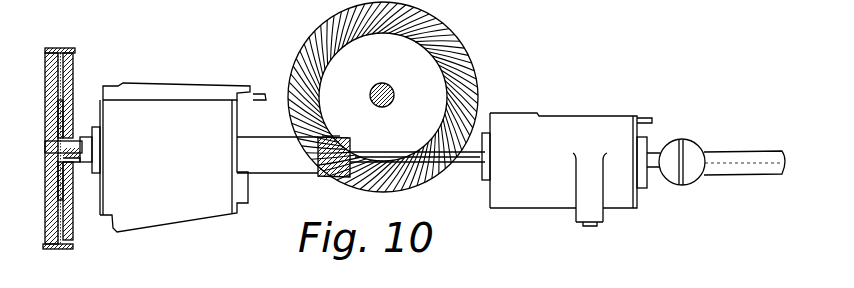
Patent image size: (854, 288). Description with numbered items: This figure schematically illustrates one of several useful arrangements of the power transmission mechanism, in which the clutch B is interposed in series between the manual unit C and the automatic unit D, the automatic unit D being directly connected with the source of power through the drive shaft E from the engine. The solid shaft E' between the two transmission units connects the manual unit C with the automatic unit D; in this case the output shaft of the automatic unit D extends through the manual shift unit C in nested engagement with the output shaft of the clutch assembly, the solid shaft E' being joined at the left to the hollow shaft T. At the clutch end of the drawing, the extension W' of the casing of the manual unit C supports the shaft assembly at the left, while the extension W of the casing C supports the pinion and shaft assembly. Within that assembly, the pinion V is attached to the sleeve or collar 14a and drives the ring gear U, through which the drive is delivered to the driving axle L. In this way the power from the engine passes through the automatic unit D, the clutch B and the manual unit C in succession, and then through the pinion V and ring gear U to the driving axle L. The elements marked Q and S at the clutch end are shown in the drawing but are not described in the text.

The clutch B is at (52, 252).
The cap Q is at (74, 70).
The sleeve S is at (70, 115).
The hollow shaft T is at (78, 165).
The solid shaft E' is at (251, 170).
The extension of the casing W' is at (111, 150).
The manual unit C is at (183, 218).
The extension of casing W is at (277, 170).
The sleeve 14a is at (318, 176).
The pinion V is at (336, 138).
The ring gear U is at (465, 75).
The driving axle L is at (392, 93).
The automatic unit D is at (620, 205).
The drive shaft E is at (722, 150).